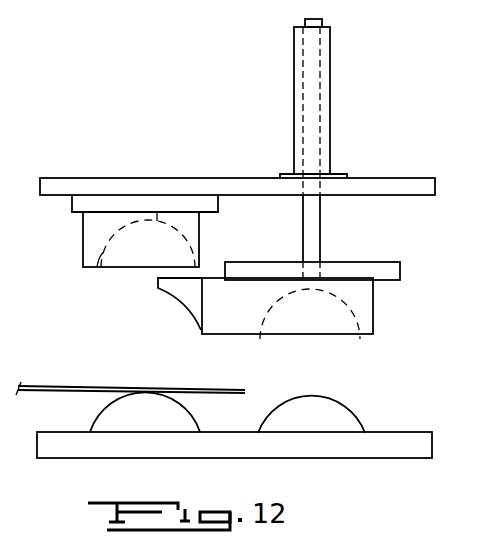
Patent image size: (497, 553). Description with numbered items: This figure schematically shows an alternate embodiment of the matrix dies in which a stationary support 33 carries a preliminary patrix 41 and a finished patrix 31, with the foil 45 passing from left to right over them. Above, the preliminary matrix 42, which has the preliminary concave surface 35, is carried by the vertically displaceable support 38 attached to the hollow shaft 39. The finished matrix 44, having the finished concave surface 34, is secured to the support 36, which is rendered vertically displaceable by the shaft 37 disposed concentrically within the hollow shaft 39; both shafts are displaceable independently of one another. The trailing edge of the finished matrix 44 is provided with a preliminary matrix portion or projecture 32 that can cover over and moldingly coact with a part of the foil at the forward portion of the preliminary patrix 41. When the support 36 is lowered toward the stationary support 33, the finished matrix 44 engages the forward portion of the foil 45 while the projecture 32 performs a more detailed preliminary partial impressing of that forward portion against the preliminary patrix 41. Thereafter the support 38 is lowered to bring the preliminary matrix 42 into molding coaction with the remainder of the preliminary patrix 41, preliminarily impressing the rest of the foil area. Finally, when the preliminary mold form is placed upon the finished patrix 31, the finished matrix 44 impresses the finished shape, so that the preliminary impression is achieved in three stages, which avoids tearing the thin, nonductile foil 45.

The finished patrix 31 is at (316, 427).
The preliminary matrix portion or projecture 32 is at (176, 297).
The stationary support 33 is at (378, 444).
The finished concave surface 34 is at (357, 335).
The preliminary concave surface 35 is at (104, 257).
The support 36 is at (373, 276).
The shaft 37 is at (312, 228).
The vertically displaceable support 38 is at (372, 183).
The hollow shaft 39 is at (322, 93).
The preliminary patrix 41 is at (152, 422).
The preliminary matrix 42 is at (108, 233).
The finished matrix 44 is at (244, 305).
The foil 45 is at (94, 388).